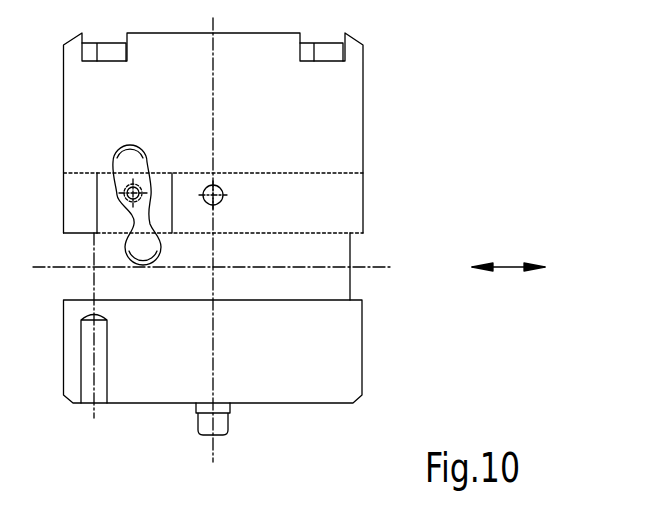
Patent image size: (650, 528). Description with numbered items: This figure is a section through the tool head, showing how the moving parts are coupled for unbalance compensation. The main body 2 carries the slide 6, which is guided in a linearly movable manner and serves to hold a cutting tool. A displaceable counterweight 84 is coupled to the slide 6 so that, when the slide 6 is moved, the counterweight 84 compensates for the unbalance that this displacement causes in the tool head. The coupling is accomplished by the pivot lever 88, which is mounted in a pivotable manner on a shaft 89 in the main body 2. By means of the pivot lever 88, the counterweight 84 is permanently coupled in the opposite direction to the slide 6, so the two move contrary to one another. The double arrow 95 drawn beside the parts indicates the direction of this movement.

The main body 2 is at (345, 203).
The slide 6 is at (345, 107).
The counterweight 84 is at (338, 283).
The pivot lever 88 is at (127, 163).
The shaft 89 is at (120, 198).
The direction of displacement 95 is at (509, 266).